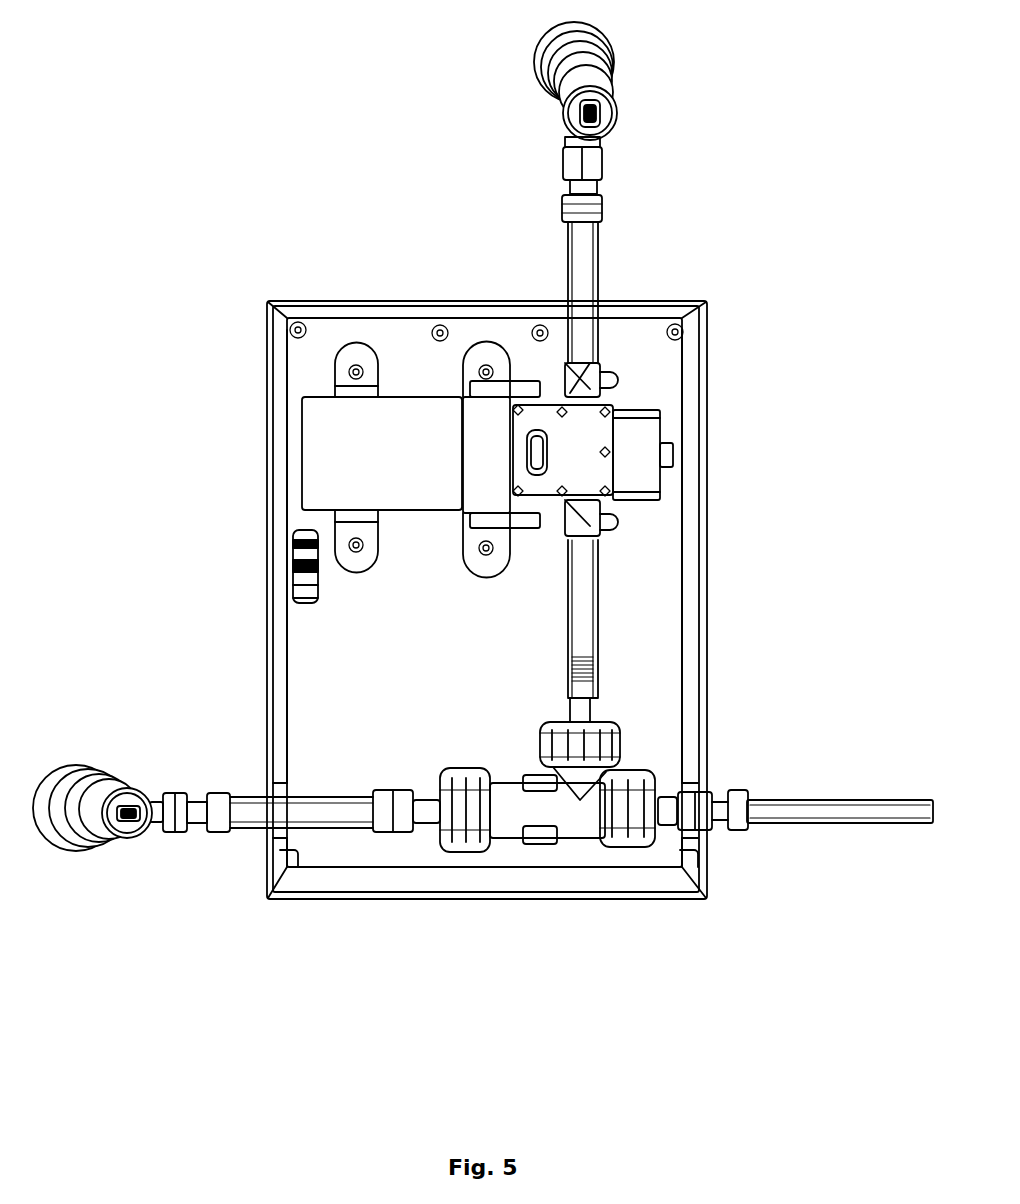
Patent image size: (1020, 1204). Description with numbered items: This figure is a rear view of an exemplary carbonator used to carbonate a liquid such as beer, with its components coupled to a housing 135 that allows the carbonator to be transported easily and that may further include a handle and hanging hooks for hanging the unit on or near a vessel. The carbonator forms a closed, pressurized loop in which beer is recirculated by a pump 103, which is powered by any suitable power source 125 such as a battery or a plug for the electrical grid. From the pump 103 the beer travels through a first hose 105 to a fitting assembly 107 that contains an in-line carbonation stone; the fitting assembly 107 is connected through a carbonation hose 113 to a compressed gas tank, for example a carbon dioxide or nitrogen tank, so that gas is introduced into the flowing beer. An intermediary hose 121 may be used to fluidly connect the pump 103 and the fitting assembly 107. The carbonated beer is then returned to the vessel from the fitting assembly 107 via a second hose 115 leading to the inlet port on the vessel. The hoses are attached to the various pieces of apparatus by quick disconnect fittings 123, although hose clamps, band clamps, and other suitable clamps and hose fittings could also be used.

The pump 103 is at (383, 447).
The first hose 105 is at (600, 262).
The fitting assembly 107 is at (577, 823).
The carbonation hose 113 is at (765, 800).
The second hose 115 is at (303, 793).
The intermediary hose 121 is at (605, 610).
The quick disconnect fittings 123 is at (533, 58).
The power source 125 is at (288, 563).
The housing 135 is at (705, 305).